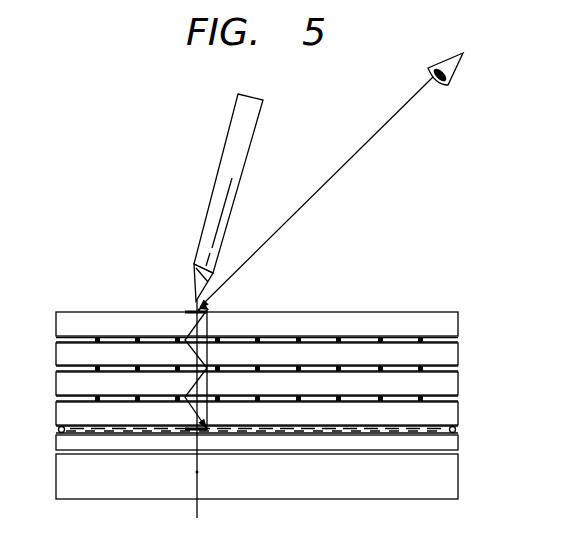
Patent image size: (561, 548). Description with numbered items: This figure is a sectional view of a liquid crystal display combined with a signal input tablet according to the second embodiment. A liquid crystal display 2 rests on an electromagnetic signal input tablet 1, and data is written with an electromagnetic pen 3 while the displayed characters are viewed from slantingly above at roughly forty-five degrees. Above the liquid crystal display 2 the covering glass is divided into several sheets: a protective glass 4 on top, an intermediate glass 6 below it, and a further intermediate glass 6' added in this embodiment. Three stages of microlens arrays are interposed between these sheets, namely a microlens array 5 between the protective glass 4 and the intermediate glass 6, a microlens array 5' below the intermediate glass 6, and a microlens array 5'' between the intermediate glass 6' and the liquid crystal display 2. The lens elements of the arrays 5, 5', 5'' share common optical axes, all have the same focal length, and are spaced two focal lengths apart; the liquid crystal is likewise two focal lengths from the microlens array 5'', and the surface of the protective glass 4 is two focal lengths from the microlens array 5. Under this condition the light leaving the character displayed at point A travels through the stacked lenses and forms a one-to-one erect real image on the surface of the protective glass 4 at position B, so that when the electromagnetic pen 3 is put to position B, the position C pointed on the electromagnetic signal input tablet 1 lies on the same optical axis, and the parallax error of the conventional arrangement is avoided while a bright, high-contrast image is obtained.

The electromagnetic signal input tablet 1 is at (458, 476).
The liquid crystal display 2 is at (465, 399).
The electromagnetic pen 3 is at (219, 168).
The protective glass 4 is at (458, 327).
The microlens array 5 is at (236, 350).
The microlens array 5' is at (236, 380).
The microlens array 5'' is at (236, 411).
The intermediate glass 6 is at (282, 356).
The intermediate glass 6' is at (285, 385).
The point A is at (195, 427).
The position B is at (189, 301).
The position C is at (188, 473).